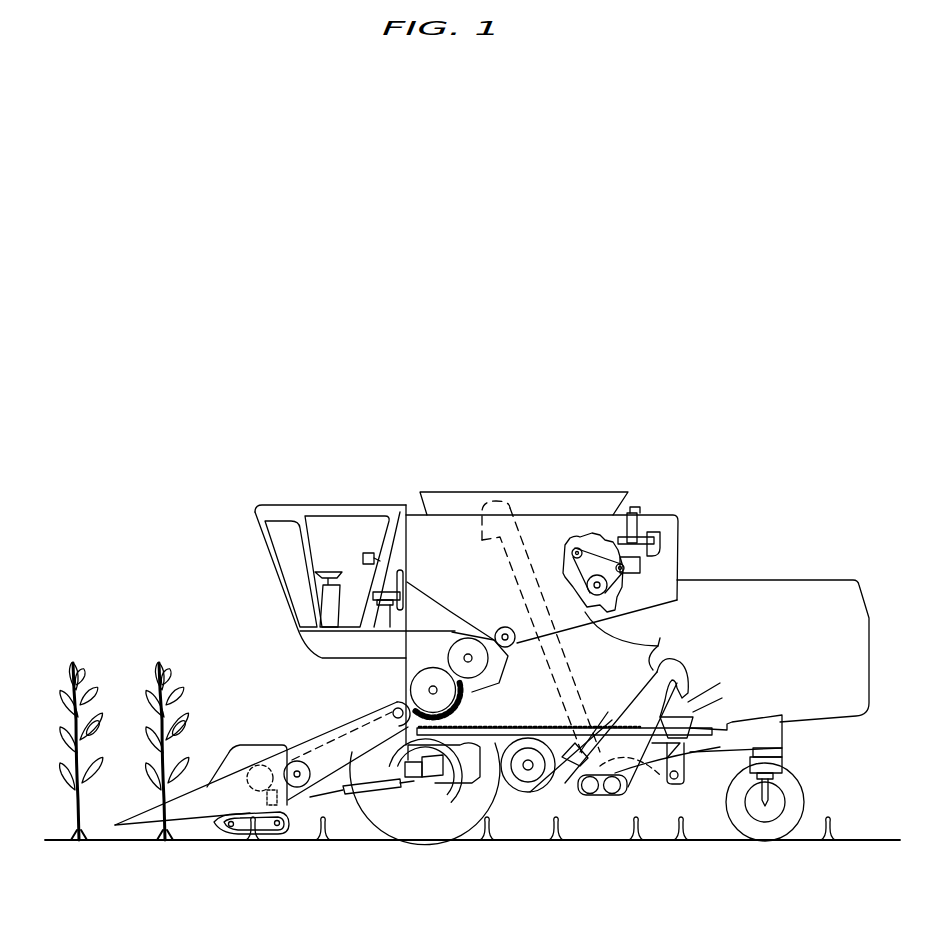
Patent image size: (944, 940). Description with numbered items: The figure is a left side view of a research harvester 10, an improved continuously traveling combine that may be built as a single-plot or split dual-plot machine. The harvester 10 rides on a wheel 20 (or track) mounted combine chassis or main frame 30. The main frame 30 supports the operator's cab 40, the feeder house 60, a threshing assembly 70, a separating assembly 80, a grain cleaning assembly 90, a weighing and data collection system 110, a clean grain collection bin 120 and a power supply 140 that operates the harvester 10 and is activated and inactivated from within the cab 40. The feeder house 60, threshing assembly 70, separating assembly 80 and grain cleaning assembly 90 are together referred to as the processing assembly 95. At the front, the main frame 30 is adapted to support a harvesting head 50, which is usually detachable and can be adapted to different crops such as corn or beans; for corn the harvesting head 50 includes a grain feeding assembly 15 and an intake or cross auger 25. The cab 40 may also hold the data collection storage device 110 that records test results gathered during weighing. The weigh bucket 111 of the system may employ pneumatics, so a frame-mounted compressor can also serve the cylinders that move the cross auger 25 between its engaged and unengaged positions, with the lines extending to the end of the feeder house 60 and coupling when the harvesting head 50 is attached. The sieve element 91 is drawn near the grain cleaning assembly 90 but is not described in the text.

The research harvester 10 is at (535, 461).
The grain feeding assembly 15 is at (190, 797).
The wheel 20 is at (424, 828).
The cross auger 25 is at (227, 803).
The main frame 30 is at (783, 757).
The cab 40 is at (308, 508).
The harvesting head 50 is at (269, 731).
The feeder house 60 is at (333, 755).
The threshing assembly 70 is at (402, 685).
The separating assembly 80 is at (490, 686).
The grain cleaning assembly 90 is at (578, 795).
The sieve 91 is at (600, 796).
The processing assembly 95 is at (546, 702).
The weighing and data collection system 110 is at (367, 553).
The weigh bucket 111 is at (693, 713).
The clean grain collection bin 120 is at (577, 500).
The power supply 140 is at (633, 537).